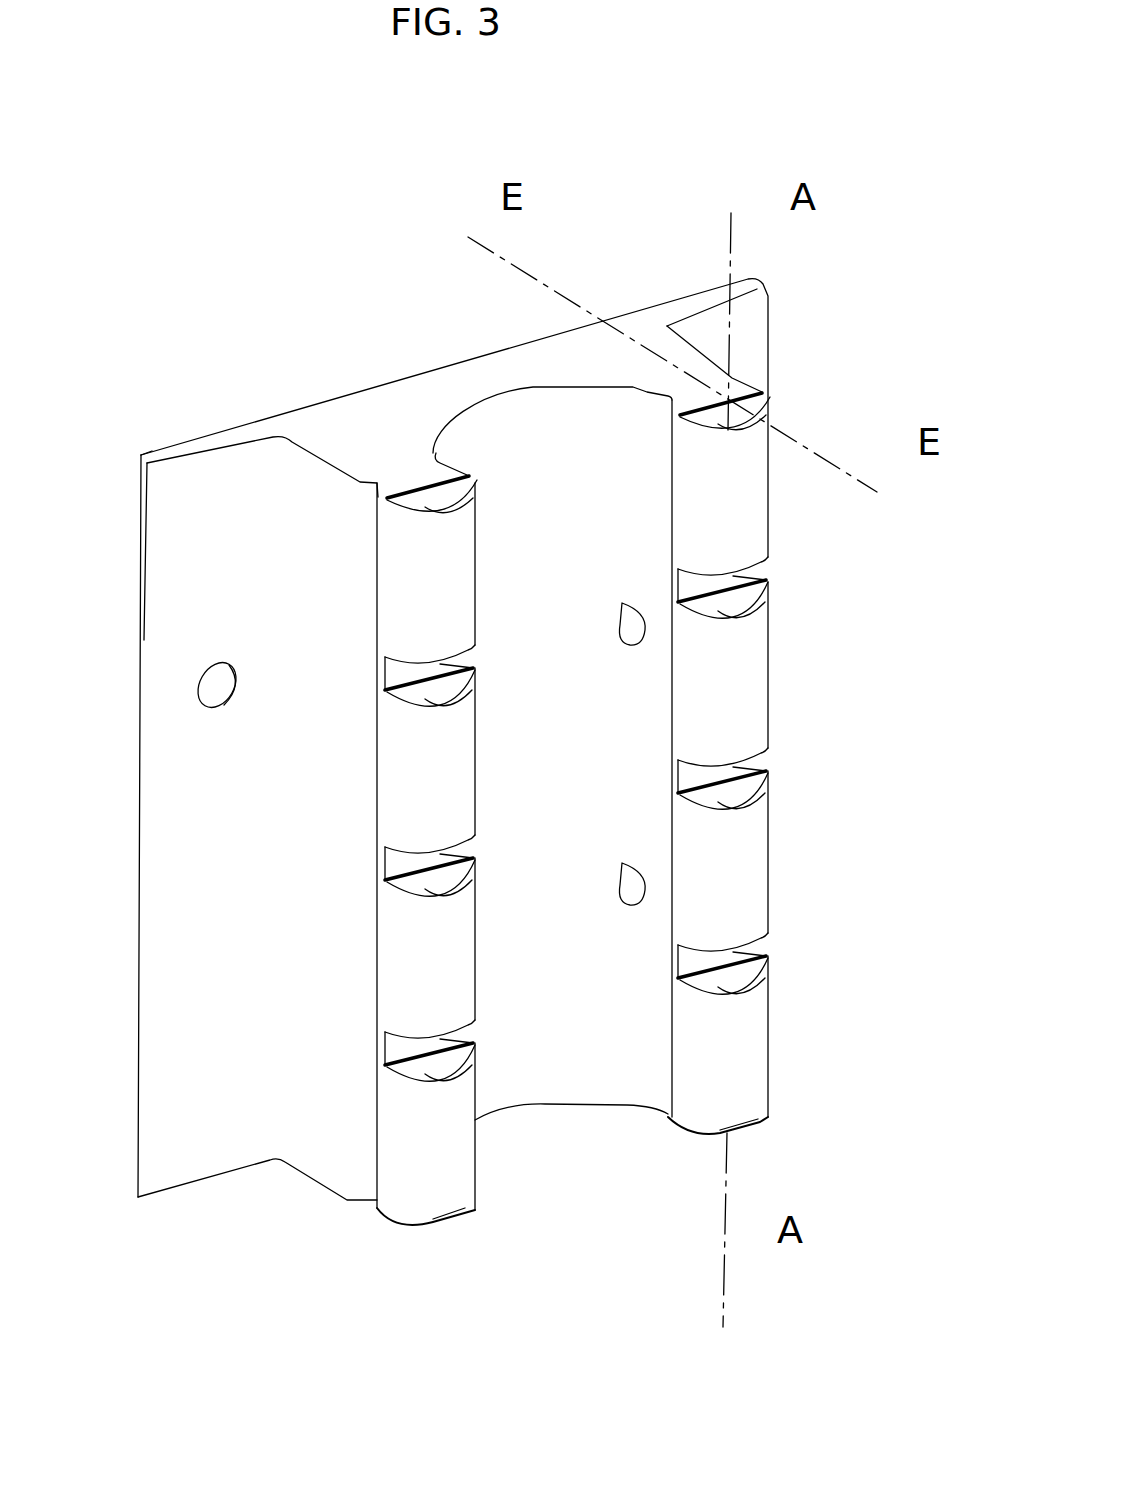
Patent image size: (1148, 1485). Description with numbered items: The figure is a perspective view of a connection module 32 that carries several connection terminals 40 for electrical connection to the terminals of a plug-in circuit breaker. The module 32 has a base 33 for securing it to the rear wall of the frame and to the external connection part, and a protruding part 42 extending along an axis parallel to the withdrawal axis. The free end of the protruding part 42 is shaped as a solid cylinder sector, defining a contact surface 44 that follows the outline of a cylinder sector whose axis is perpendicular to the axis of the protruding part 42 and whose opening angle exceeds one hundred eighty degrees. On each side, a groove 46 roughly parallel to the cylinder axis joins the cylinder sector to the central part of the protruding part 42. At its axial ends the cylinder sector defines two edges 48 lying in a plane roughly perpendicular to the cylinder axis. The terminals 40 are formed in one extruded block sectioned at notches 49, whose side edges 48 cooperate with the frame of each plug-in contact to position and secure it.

The connection module 32 is at (477, 378).
The base 33 is at (213, 443).
The connection terminals 40 is at (318, 770).
The protruding part 42 is at (423, 590).
The contact surface 44 is at (258, 685).
The groove 46 is at (732, 378).
The edges 48 is at (743, 788).
The notches 49 is at (703, 583).